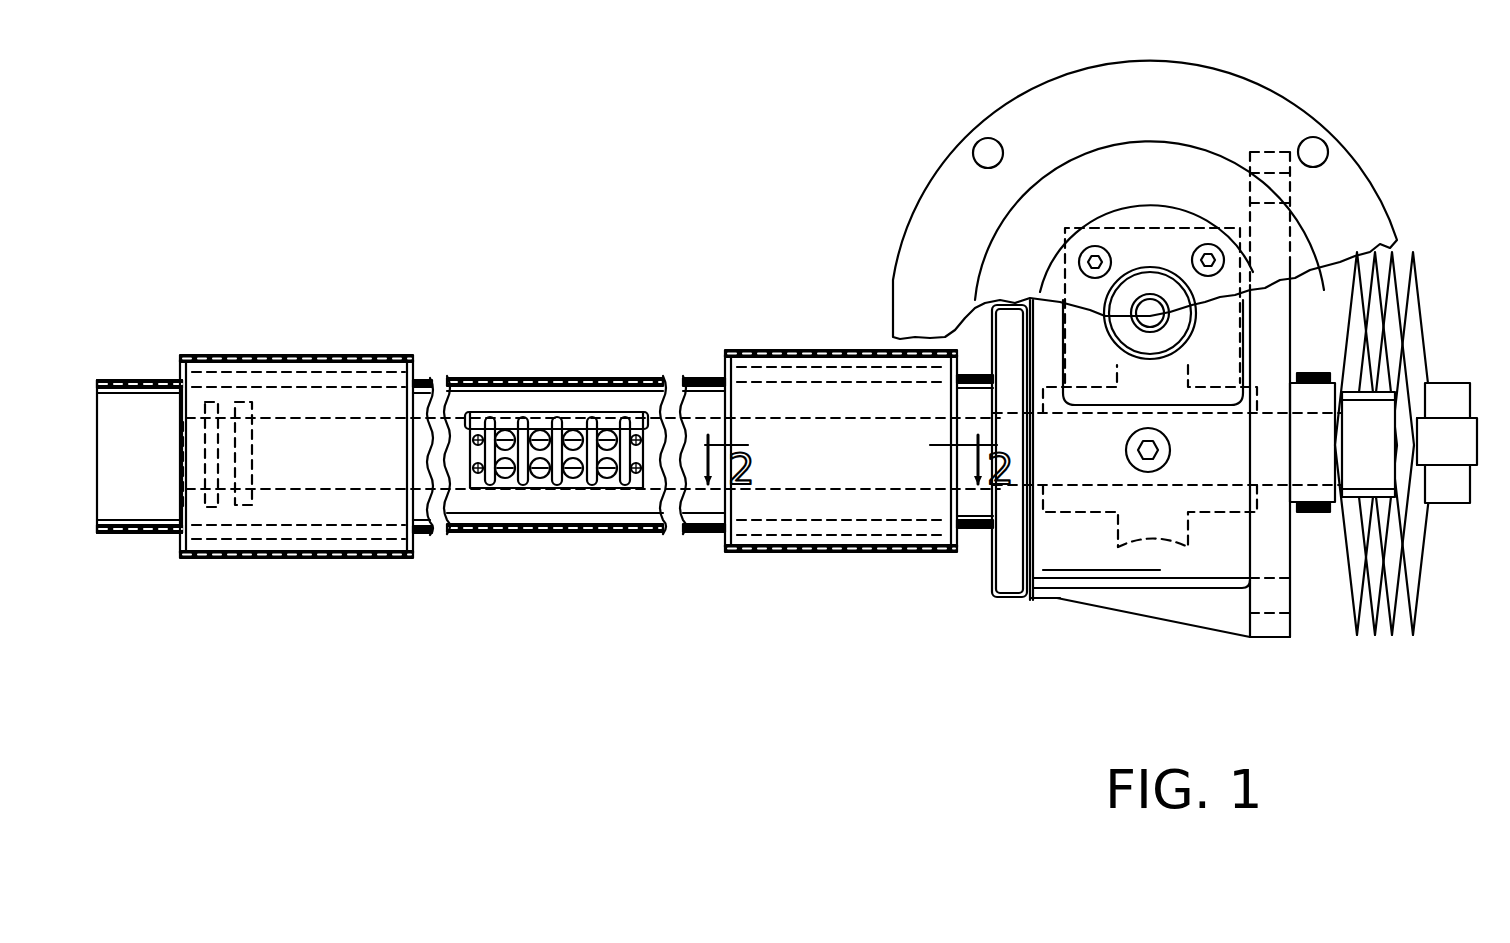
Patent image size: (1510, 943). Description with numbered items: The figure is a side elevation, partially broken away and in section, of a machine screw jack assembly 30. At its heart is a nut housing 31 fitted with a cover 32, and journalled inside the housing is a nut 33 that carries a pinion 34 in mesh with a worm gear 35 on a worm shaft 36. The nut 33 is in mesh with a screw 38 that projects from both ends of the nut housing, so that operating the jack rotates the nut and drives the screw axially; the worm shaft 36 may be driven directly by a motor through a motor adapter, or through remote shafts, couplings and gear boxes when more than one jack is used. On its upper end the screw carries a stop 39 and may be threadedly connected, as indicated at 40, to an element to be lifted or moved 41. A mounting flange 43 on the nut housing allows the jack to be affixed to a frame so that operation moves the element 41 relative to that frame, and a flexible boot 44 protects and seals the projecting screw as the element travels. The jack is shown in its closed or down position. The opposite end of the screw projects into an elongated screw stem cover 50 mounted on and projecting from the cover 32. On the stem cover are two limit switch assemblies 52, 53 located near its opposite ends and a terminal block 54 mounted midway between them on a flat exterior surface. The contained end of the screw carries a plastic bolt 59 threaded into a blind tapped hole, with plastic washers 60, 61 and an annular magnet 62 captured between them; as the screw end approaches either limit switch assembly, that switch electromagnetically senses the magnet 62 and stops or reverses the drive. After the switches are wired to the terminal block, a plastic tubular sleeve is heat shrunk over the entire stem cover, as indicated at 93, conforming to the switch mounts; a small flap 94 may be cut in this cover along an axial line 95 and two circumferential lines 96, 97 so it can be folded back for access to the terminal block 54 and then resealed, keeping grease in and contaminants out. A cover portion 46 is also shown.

The machine screw jack assembly 30 is at (1388, 181).
The nut housing 31 is at (1052, 601).
The cover 32 is at (1000, 578).
The nut 33 is at (1098, 520).
The pinion 34 is at (1160, 555).
The worm gear 35 is at (1172, 268).
The worm shaft 36 is at (1148, 303).
The screw 38 is at (830, 490).
The stop 39 is at (1345, 407).
The threaded connection 40 is at (1445, 470).
The element to be lifted or moved 41 is at (1477, 505).
The mounting flange 43 is at (1270, 638).
The flexible boot 44 is at (1420, 592).
The cover 46 is at (890, 272).
The screw stem cover 50 is at (690, 522).
The limit switch assembly 52 is at (392, 351).
The limit switch assembly 53 is at (786, 346).
The terminal block 54 is at (506, 445).
The plastic bolt 59 is at (176, 455).
The plastic washer 60 is at (186, 508).
The plastic washer 61 is at (256, 422).
The annular magnet 62 is at (226, 402).
The heat shrunk sleeve 93 is at (488, 379).
The flap 94 is at (600, 412).
The axial line 95 is at (530, 412).
The circumferential line 96 is at (470, 428).
The circumferential line 97 is at (686, 398).